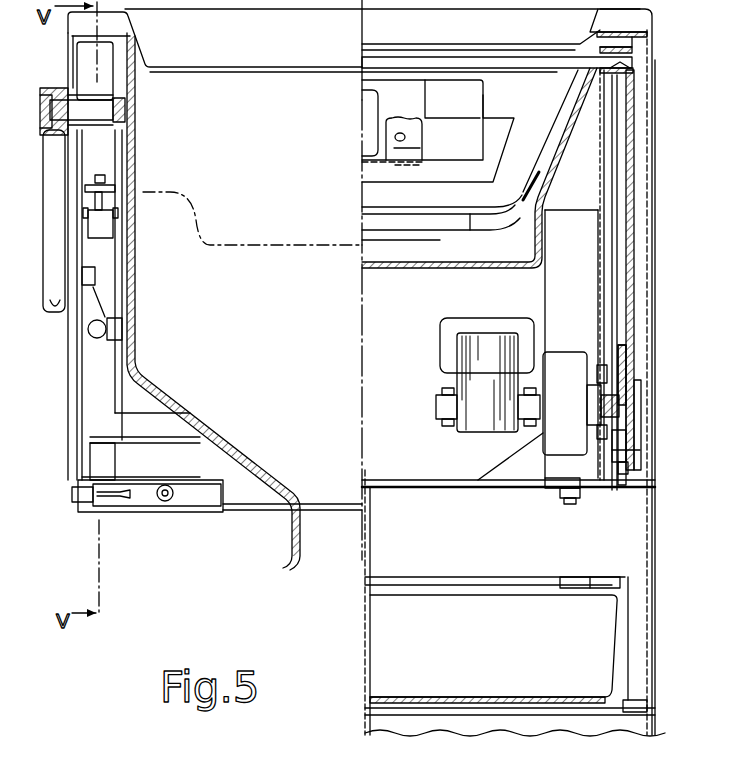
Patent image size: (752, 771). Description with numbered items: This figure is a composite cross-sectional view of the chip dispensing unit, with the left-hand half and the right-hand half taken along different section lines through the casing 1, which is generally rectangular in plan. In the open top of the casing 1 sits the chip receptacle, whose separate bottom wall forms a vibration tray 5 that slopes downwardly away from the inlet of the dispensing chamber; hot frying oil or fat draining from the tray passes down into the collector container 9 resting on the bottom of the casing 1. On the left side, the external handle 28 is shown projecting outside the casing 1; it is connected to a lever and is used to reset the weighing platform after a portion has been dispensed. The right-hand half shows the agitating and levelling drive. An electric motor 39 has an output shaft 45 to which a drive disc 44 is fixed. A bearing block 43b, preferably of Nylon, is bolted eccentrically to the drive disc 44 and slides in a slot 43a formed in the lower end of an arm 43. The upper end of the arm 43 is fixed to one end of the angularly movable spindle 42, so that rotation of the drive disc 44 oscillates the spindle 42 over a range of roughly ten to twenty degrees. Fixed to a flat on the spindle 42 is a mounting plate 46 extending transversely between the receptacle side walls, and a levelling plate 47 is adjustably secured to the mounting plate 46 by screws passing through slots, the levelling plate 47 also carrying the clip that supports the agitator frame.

The casing 1 is at (78, 418).
The vibration tray 5 is at (543, 190).
The collector container 9 is at (508, 659).
The external handle 28 is at (54, 245).
The electric motor 39 is at (475, 432).
The spindle 42 is at (628, 70).
The arm 43 is at (632, 232).
The slot 43a is at (632, 395).
The bearing block 43b is at (628, 447).
The drive disc 44 is at (630, 385).
The output shaft 45 is at (605, 405).
The mounting plate 46 is at (470, 149).
The levelling plate 47 is at (502, 130).